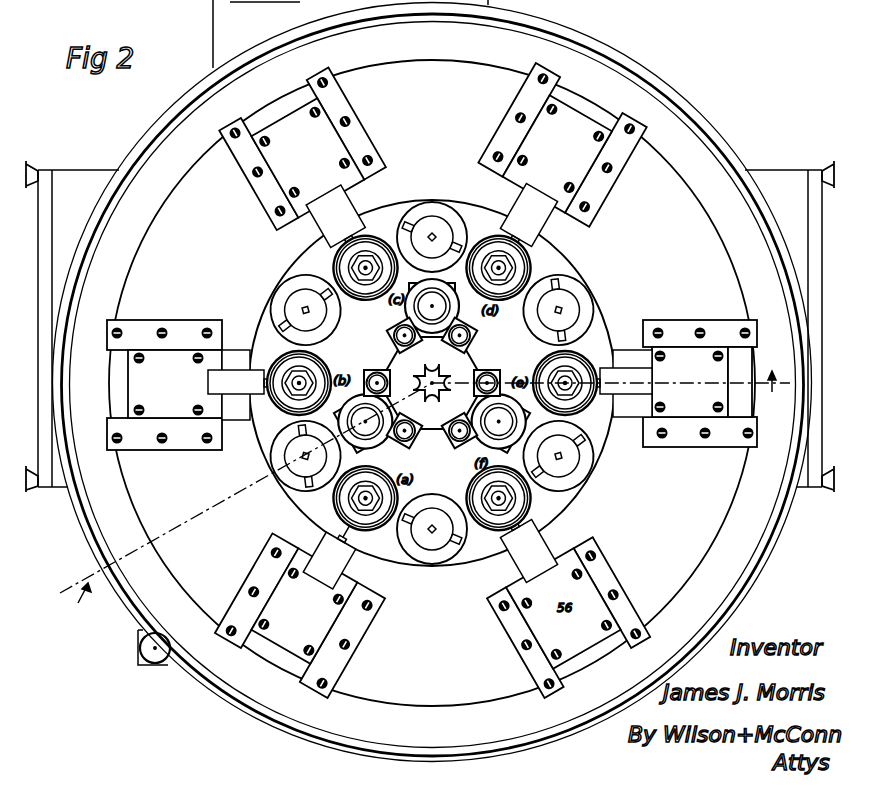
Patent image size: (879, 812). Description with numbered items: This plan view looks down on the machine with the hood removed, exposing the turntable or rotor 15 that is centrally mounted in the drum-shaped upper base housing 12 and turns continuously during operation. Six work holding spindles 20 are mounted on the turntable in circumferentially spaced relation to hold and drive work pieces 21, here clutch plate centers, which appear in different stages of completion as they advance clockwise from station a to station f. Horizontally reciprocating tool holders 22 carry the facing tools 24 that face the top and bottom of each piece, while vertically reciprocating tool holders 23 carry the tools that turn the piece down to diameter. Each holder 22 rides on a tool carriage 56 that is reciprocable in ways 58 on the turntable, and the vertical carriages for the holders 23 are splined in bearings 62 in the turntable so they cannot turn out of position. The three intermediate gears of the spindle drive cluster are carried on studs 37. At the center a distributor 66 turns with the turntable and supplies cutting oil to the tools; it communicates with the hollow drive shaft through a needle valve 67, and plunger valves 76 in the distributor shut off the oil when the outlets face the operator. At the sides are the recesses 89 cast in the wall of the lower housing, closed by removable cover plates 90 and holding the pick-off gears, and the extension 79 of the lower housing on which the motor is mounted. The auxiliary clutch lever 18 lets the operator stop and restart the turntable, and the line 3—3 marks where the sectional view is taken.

The section line 3- 3 is at (422, 492).
The upper base housing 12 is at (697, 110).
The turntable 15 is at (700, 260).
The auxiliary clutch lever 18 is at (150, 647).
The work holding spindles 20 is at (371, 503).
The work pieces 21 is at (303, 368).
The horizontally reciprocating tool holders 22 is at (333, 210).
The vertically reciprocating tool holders 23 is at (436, 226).
The facing tools 24 is at (352, 522).
The studs 37 is at (433, 300).
The tool carriages 56 is at (304, 605).
The ways 58 is at (330, 672).
The bearings 62 is at (291, 294).
The distributor 66 is at (466, 365).
The needle valve 67 is at (424, 381).
The plunger valves 76 is at (410, 427).
The extension of the lower base housing 79 is at (382, 34).
The recesses 89 is at (773, 172).
The removable cover plates 90 is at (818, 165).